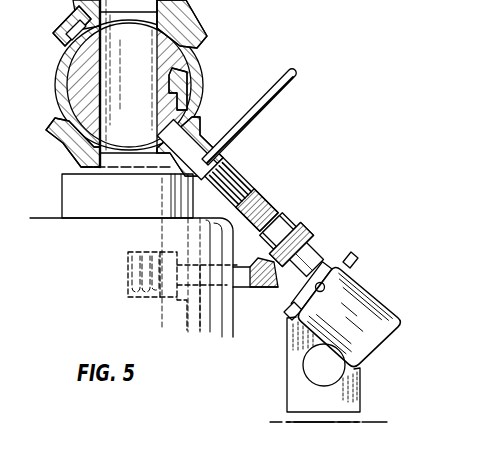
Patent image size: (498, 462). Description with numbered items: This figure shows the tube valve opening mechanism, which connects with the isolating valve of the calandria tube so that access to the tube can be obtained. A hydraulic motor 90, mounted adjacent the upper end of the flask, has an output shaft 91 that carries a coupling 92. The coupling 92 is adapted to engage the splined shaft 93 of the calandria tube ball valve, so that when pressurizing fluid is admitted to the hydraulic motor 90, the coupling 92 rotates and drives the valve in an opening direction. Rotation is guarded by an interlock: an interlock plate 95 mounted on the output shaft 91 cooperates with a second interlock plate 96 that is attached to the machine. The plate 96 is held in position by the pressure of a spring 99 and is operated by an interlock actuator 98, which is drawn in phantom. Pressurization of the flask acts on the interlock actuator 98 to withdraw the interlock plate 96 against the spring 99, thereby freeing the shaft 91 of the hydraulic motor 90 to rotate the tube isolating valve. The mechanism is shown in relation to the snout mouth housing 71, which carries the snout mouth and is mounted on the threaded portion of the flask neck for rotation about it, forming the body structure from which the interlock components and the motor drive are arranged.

The snout mouth housing 71 is at (214, 250).
The hydraulic motor 90 is at (380, 290).
The output shaft 91 is at (282, 224).
The coupling 92 is at (240, 174).
The splined shaft 93 is at (232, 165).
The interlock plate 95 is at (308, 234).
The interlock plate 96 is at (265, 287).
The interlock actuator 98 is at (168, 303).
The spring 99 is at (127, 278).